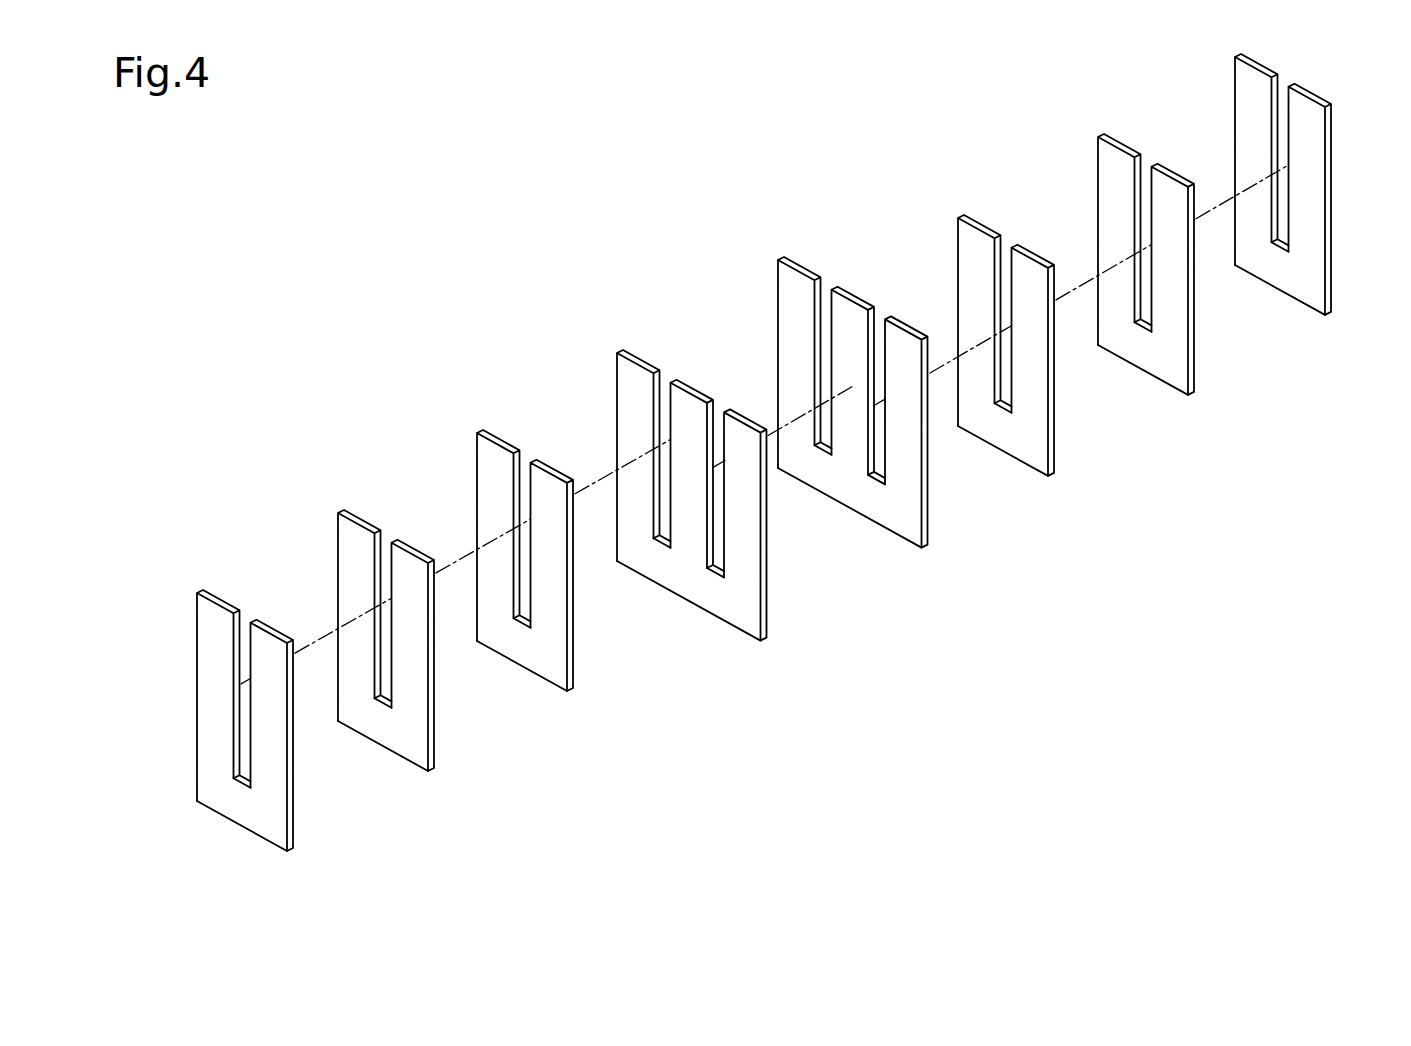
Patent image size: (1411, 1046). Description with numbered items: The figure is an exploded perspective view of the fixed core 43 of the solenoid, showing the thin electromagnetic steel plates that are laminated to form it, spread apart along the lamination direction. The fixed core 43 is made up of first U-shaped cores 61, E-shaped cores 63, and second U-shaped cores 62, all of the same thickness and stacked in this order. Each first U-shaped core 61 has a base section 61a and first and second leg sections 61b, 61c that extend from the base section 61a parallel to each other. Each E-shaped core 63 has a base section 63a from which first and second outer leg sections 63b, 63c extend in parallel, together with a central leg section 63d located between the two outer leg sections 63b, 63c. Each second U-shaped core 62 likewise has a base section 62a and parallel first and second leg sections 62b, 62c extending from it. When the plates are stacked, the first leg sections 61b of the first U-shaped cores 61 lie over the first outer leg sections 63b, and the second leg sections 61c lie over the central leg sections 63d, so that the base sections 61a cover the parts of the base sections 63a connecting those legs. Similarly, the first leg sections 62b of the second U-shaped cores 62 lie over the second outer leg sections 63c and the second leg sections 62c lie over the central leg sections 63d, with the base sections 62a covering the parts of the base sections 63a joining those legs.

The fixed core 43 is at (586, 245).
The first U-shaped core 61 is at (386, 651).
The base section 61a is at (238, 815).
The first leg section 61b is at (209, 641).
The second leg section 61c is at (277, 735).
The second U-shaped core 62 is at (1145, 279).
The base section 62a is at (1018, 450).
The first leg section 62b is at (1038, 360).
The second leg section 62c is at (970, 266).
The E-shaped core 63 is at (773, 457).
The base section 63a is at (711, 605).
The first outer leg section 63b is at (627, 400).
The second outer leg section 63c is at (747, 525).
The central leg section 63d is at (687, 411).